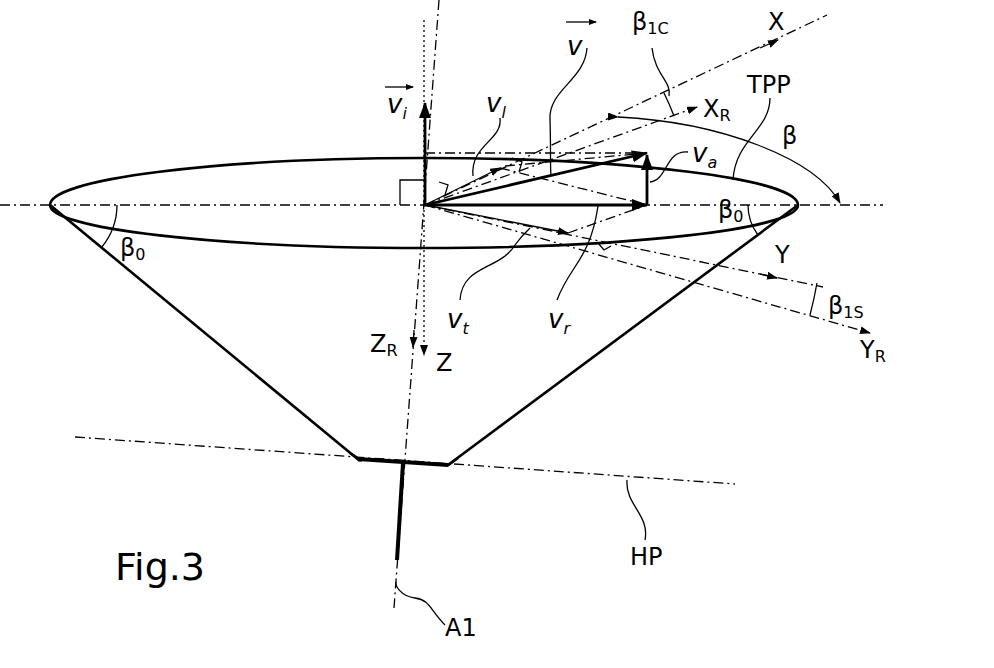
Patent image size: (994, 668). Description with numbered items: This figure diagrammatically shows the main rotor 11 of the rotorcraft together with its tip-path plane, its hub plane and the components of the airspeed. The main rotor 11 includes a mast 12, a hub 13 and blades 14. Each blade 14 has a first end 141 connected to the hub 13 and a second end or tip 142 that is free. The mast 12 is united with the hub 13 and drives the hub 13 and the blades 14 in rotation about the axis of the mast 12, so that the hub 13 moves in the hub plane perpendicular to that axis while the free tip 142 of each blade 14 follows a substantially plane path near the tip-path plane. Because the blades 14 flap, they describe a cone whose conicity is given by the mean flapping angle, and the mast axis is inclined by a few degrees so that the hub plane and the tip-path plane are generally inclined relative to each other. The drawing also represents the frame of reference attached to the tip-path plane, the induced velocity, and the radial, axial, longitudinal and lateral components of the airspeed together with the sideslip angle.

The main rotor 11 is at (724, 398).
The mast 12 is at (395, 517).
The hub 13 is at (425, 468).
The blade 14 is at (220, 345).
The first end 141 is at (357, 458).
The second end or tip 142 is at (50, 204).